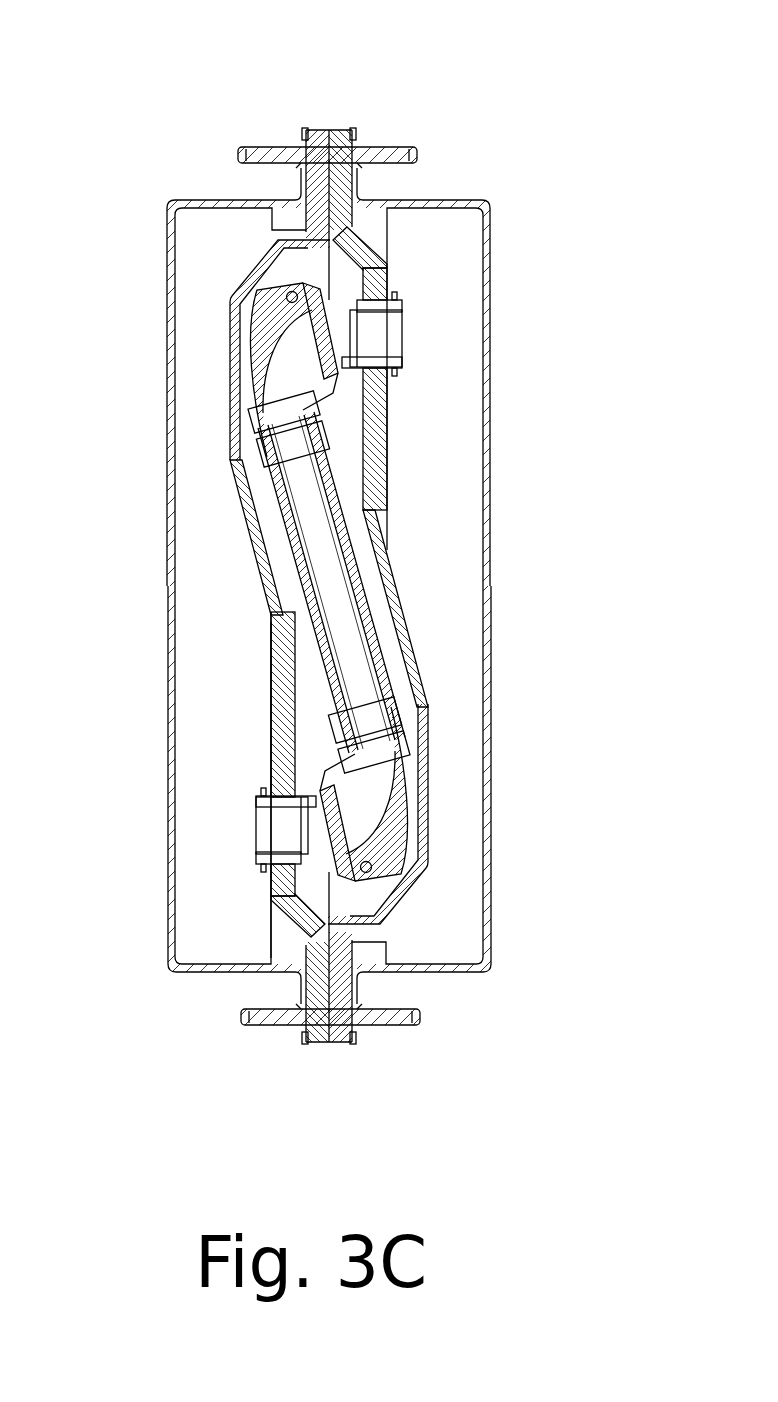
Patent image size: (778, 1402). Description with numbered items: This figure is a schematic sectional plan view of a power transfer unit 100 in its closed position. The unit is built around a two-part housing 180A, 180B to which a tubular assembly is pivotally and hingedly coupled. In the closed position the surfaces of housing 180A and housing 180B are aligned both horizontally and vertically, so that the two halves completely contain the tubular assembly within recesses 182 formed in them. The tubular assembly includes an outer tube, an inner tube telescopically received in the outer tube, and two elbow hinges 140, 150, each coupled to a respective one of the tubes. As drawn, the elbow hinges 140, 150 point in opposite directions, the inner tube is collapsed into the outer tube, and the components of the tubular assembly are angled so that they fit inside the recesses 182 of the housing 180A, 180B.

The power transfer unit 100 is at (348, 70).
The elbow hinge 140 is at (257, 808).
The elbow hinge 150 is at (400, 312).
The housing 180A is at (247, 508).
The housing 180B is at (377, 488).
The recess 182 is at (312, 263).